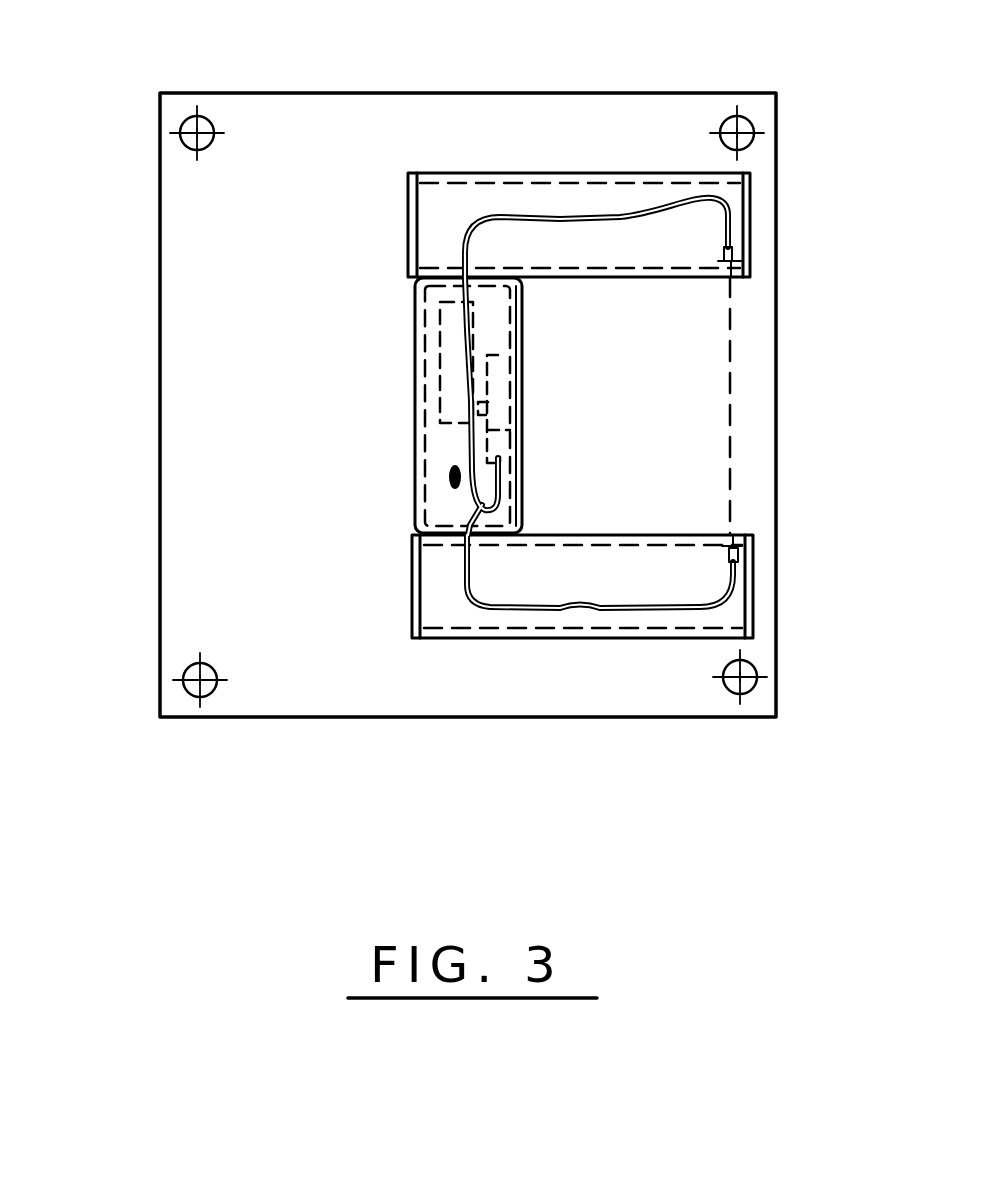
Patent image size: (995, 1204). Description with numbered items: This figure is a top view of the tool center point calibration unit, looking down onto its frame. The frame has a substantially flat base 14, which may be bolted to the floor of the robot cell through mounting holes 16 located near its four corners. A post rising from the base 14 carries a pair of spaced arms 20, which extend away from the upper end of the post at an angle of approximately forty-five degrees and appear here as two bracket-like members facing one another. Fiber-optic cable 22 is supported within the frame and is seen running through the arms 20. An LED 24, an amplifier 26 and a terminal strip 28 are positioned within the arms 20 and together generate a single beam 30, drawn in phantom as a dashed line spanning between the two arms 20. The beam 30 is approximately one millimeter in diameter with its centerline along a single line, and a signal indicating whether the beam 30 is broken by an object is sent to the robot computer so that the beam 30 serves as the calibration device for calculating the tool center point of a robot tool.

The base 14 is at (160, 398).
The mounting holes 16 is at (183, 125).
The arms 20 is at (530, 173).
The fiber-optic cable 22 is at (613, 217).
The LED 24 is at (445, 478).
The amplifier 26 is at (503, 322).
The terminal strip 28 is at (438, 337).
The single beam 30 is at (730, 402).